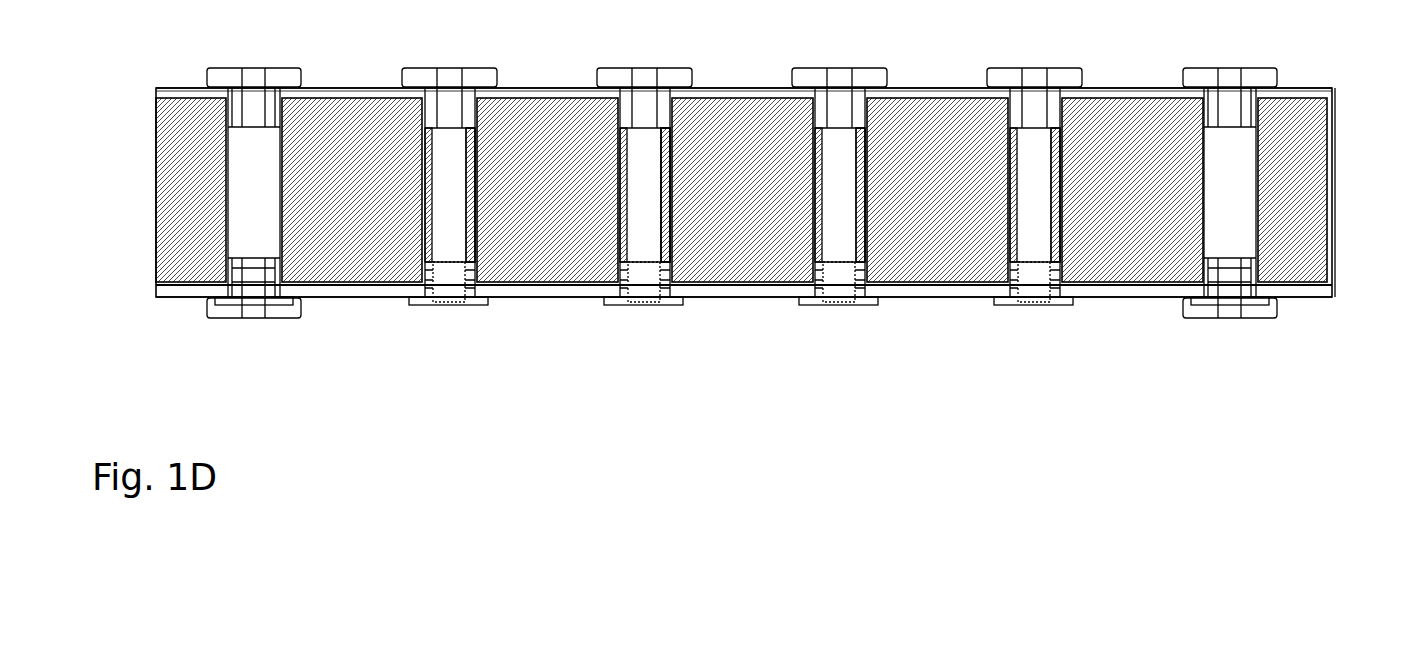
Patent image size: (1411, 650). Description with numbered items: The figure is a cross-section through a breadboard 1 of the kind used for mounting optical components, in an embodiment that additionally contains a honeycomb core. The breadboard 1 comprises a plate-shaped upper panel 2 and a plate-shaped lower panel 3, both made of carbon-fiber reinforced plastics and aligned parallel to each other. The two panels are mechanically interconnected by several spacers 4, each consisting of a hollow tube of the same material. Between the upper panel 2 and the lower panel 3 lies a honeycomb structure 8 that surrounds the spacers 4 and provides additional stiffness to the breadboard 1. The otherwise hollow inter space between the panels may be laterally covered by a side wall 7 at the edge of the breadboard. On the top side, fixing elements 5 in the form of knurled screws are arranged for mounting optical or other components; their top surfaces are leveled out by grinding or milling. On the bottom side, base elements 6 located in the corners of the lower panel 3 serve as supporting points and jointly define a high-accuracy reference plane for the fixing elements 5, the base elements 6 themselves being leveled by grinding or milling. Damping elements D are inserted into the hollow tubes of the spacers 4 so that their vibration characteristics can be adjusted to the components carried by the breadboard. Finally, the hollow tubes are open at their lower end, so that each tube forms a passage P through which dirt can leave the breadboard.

The breadboard 1 is at (1133, 376).
The upper panel 2 is at (753, 88).
The lower panel 3 is at (908, 288).
The spacer 4 is at (668, 247).
The fixing element 5 is at (422, 73).
The base element 6 is at (288, 308).
The side wall 7 is at (1332, 185).
The honeycomb structure 8 is at (543, 265).
The damping element D is at (475, 202).
The passage P is at (447, 285).